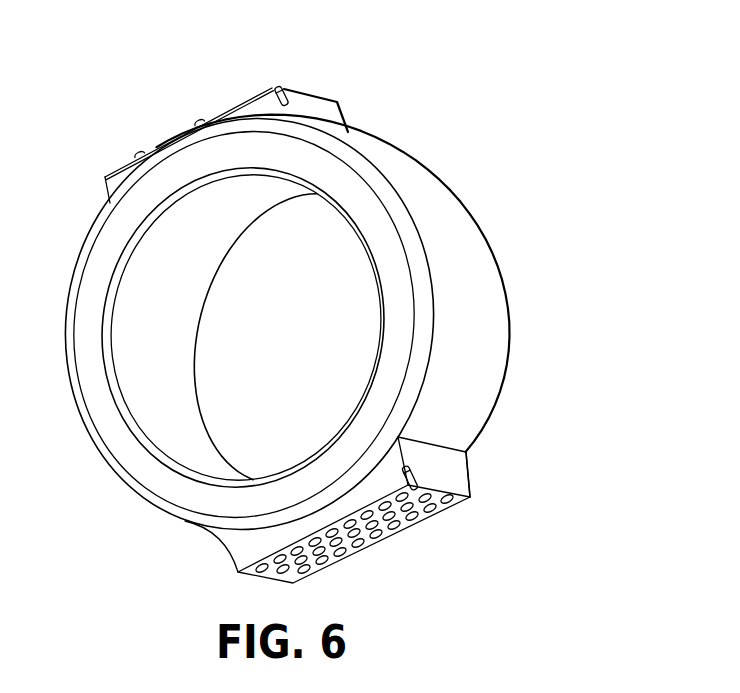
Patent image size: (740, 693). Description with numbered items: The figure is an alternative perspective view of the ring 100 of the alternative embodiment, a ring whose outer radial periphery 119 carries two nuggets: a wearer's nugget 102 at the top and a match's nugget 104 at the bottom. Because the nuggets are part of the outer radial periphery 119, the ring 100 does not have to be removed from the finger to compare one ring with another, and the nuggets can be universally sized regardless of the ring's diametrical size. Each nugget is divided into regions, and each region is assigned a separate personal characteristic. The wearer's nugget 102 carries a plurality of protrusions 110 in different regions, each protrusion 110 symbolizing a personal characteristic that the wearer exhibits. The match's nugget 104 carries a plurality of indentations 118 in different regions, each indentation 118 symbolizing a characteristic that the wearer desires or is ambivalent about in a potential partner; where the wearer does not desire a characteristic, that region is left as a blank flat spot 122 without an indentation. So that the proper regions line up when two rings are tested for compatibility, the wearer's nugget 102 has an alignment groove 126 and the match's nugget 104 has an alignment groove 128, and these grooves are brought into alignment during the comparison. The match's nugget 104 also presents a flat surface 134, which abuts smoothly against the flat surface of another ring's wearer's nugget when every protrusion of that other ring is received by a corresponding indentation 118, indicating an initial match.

The ring 100 is at (560, 328).
The wearer's nugget 102 is at (387, 89).
The match's nugget 104 is at (502, 456).
The protrusions 110 is at (160, 125).
The indentations 118 is at (361, 551).
The outer radial periphery 119 is at (382, 283).
The blank flat spot 122 is at (298, 549).
The alignment groove 126 is at (204, 57).
The alignment groove 128 is at (504, 432).
The flat surface 134 is at (529, 474).